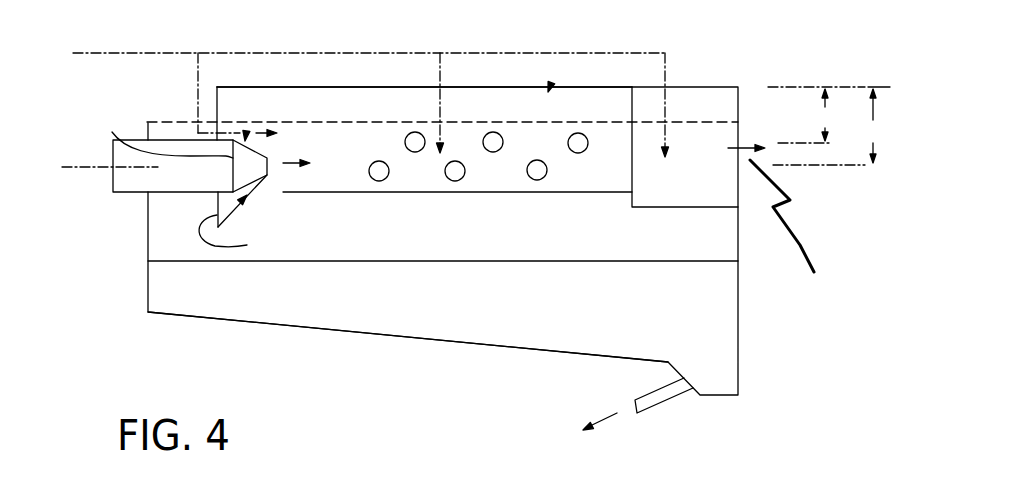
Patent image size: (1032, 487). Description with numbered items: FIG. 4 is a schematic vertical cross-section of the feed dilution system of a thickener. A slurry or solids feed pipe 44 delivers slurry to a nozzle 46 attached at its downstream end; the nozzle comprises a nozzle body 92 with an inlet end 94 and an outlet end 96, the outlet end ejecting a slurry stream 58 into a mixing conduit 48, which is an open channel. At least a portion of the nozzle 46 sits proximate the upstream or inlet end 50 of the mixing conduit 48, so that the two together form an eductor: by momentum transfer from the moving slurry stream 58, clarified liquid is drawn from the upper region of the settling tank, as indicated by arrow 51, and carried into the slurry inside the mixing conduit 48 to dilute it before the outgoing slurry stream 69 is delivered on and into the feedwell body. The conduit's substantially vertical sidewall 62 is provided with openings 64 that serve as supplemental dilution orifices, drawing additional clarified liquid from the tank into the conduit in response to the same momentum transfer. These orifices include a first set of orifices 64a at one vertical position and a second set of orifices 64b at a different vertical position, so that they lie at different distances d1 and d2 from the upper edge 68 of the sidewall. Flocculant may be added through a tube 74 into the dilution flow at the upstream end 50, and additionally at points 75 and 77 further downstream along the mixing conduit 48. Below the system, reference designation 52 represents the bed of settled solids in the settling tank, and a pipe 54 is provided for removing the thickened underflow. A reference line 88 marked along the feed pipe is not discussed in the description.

The feed pipe 44 is at (125, 192).
The nozzle 46 is at (246, 133).
The mixing conduit 48 is at (549, 88).
The upstream end 50 is at (217, 102).
The arrow 51 is at (203, 240).
The bed of settled solids 52 is at (457, 320).
The pipe 54 is at (667, 400).
The slurry stream 58 is at (290, 163).
The sidewall 62 is at (580, 100).
The orifices 64 is at (413, 151).
The first set of orifices 64a is at (464, 176).
The second set of orifices 64b is at (483, 146).
The upper edge 68 is at (569, 88).
The outgoing slurry stream 69 is at (787, 228).
The tube 74 is at (198, 78).
The point 75 is at (442, 78).
The point 77 is at (690, 70).
The axis 88 is at (72, 172).
The nozzle body 92 is at (257, 180).
The inlet end 94 is at (152, 155).
The outlet end 96 is at (285, 157).
The distance d1 is at (831, 126).
The distance d2 is at (816, 115).